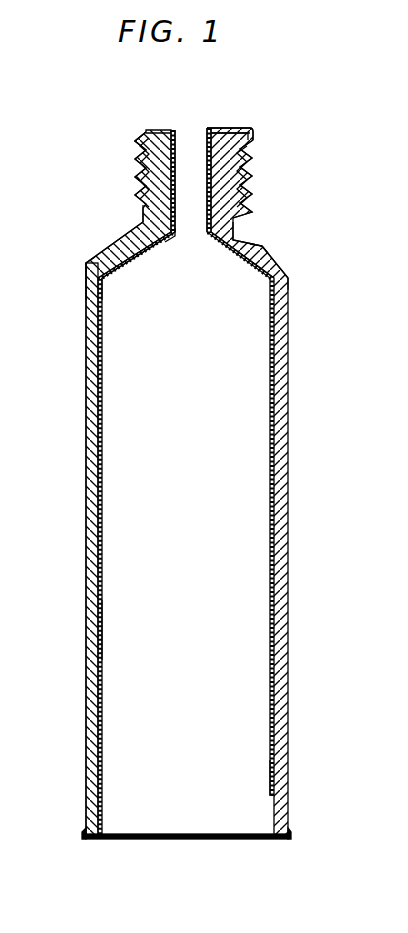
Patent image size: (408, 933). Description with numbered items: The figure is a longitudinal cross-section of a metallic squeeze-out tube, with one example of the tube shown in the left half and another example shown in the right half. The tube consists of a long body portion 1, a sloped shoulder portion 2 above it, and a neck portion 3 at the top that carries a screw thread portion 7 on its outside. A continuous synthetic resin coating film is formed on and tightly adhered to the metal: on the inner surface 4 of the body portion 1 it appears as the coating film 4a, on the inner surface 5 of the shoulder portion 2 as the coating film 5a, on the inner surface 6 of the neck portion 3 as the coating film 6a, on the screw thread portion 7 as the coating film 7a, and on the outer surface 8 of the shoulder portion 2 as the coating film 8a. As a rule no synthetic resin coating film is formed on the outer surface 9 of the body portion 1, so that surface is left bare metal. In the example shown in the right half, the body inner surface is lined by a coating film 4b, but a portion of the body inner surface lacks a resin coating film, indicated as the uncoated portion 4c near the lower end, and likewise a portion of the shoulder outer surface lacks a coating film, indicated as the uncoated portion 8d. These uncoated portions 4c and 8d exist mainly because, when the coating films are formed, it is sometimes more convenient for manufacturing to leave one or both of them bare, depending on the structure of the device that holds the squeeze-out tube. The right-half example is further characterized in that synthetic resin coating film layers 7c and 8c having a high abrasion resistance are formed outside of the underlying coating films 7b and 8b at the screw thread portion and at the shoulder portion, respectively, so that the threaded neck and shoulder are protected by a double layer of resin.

The body portion 1 is at (85, 443).
The shoulder portion 2 is at (94, 282).
The neck portion 3 is at (141, 218).
The inner surface of body portion 4 is at (113, 524).
The synthetic resin coating film on body inner surface 4a is at (92, 632).
The synthetic resin coating film on body inner surface (right-half example) 4b is at (281, 533).
The uncoated portion of body inner surface 4c is at (257, 810).
The inner surface of shoulder portion 5 is at (140, 266).
The synthetic resin coating film on shoulder inner surface 5a is at (163, 236).
The inner surface of neck portion 6 is at (177, 187).
The synthetic resin coating film on neck inner surface 6a is at (177, 135).
The screw thread portion 7 is at (134, 170).
The synthetic resin coating film on screw thread portion 7a is at (137, 152).
The synthetic resin coating film on screw thread portion (right-half example) 7b is at (244, 129).
The high abrasion resistance coating film layer on screw thread portion 7c is at (250, 146).
The outer surface of shoulder portion 8 is at (104, 242).
The synthetic resin coating film on shoulder outer surface 8a is at (90, 263).
The synthetic resin coating film on shoulder outer surface (right-half example) 8b is at (253, 243).
The high abrasion resistance coating film layer on shoulder portion 8c is at (263, 249).
The uncoated portion of shoulder outer surface 8d is at (278, 257).
The outer surface of body portion 9 is at (86, 504).